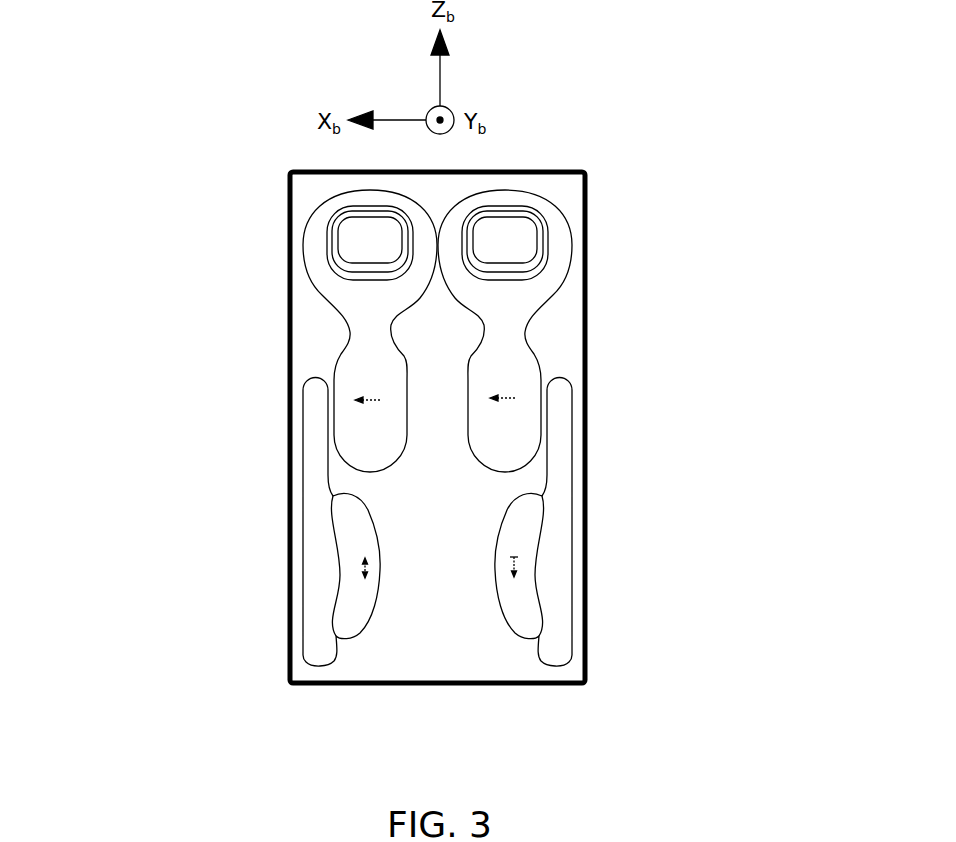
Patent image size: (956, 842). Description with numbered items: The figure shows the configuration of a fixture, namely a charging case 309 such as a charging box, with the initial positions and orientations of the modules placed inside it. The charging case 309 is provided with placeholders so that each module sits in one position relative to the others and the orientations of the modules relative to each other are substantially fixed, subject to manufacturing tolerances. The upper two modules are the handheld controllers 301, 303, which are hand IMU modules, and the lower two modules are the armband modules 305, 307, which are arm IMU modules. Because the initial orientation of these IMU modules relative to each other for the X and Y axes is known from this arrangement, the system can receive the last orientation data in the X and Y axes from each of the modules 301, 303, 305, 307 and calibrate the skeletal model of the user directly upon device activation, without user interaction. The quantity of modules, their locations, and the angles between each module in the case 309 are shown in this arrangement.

The handheld controller 301 is at (275, 331).
The handheld controller 303 is at (600, 331).
The armband module 305 is at (246, 522).
The armband module 307 is at (629, 522).
The charging case 309 is at (420, 688).